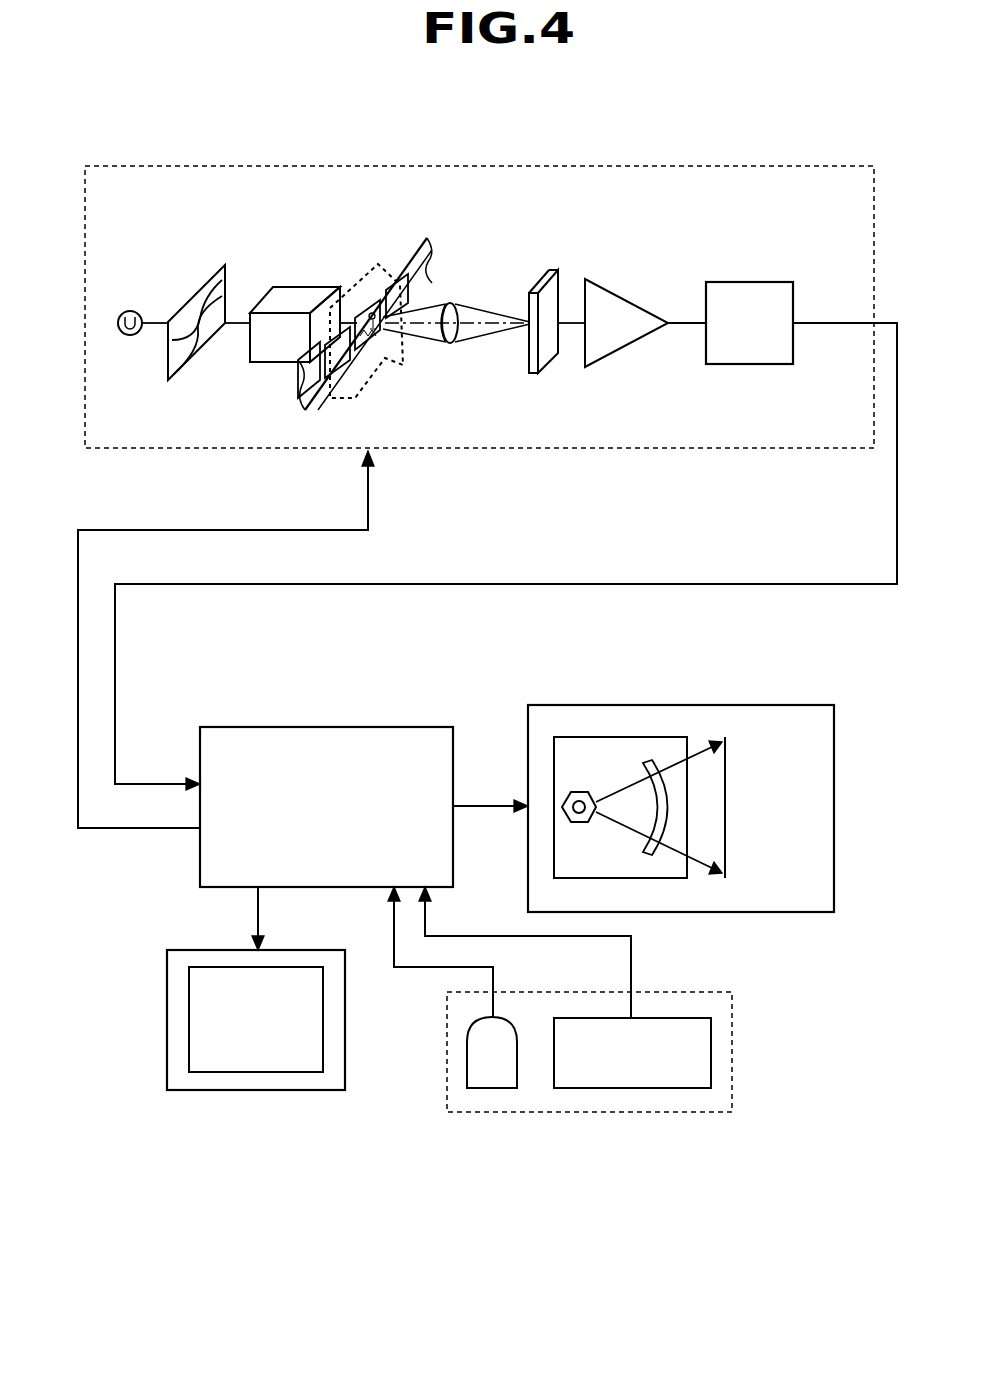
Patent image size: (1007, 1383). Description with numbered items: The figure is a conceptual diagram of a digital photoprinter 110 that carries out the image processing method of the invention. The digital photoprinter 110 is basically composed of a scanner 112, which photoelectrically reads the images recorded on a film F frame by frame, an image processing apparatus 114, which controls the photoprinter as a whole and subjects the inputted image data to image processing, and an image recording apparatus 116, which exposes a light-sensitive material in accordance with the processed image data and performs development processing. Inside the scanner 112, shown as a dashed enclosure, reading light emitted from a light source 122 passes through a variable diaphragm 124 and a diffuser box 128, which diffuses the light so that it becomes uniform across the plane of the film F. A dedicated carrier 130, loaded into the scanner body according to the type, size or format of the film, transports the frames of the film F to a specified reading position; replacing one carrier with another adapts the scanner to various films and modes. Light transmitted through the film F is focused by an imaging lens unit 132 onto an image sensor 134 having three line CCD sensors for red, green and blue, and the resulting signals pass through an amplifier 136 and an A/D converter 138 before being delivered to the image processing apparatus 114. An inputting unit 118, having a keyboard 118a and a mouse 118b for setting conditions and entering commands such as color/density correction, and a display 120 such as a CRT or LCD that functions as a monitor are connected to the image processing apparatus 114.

The digital photoprinter 110 is at (748, 132).
The scanner 112 is at (300, 165).
The image processing apparatus 114 is at (330, 725).
The image recording apparatus 116 is at (678, 704).
The inputting unit 118 is at (566, 1115).
The keyboard 118a is at (643, 1090).
The mouse 118b is at (488, 1090).
The display 120 is at (246, 1092).
The light source 122 is at (130, 310).
The variable diaphragm 124 is at (200, 280).
The diffuser box 128 is at (296, 302).
The carrier 130 is at (388, 362).
The imaging lens unit 132 is at (448, 302).
The image sensor 134 is at (555, 298).
The amplifier 136 is at (630, 350).
The A/D converter 138 is at (752, 365).
The film F is at (420, 238).